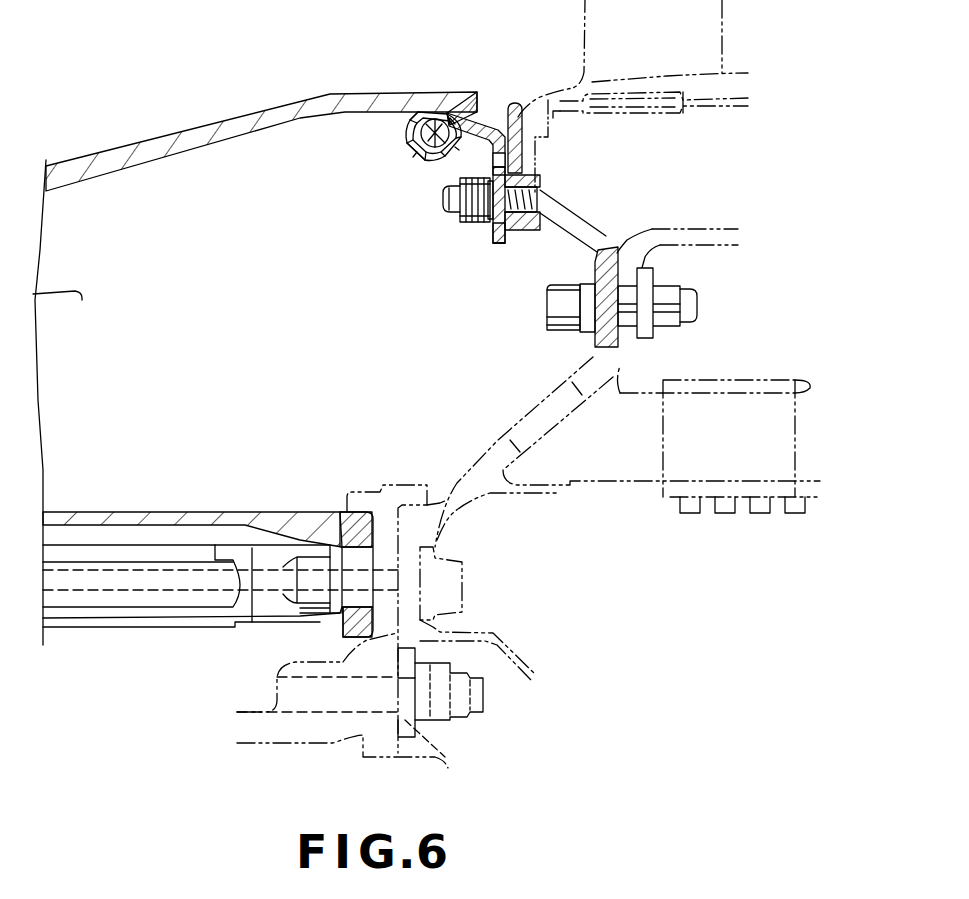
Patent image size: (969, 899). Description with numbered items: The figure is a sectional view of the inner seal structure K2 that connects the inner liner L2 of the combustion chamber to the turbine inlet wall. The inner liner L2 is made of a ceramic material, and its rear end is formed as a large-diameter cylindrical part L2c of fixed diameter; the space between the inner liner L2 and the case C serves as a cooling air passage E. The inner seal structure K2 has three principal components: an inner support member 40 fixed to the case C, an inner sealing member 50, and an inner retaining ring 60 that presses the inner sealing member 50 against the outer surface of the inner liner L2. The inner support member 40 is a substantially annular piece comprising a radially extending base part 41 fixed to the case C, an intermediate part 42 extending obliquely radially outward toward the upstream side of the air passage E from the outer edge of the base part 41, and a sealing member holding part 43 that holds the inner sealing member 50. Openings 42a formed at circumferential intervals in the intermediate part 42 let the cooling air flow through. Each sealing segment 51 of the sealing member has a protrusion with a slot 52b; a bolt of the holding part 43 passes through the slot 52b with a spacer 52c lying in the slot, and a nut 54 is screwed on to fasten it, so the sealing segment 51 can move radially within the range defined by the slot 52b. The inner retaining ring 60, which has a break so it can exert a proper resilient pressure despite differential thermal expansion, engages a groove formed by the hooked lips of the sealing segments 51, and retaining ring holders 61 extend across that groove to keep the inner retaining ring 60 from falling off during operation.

The cooling air passage E is at (241, 257).
The inner liner L2 is at (232, 118).
The large-diameter cylindrical part L2c is at (423, 90).
The sealing segment 51 is at (491, 120).
The slot 52b is at (503, 184).
The spacer 52c is at (485, 232).
The sealing member holding part 43 is at (522, 131).
The inner retaining ring 60 is at (410, 125).
The retaining ring holder 61 is at (442, 155).
The inner sealing member 50 is at (405, 148).
The nut 54 is at (473, 220).
The inner support member 40 is at (567, 223).
The opening 42a is at (592, 249).
The intermediate part 42 is at (553, 230).
The base part 41 is at (613, 333).
The inner seal structure K2 is at (452, 255).
The case C is at (485, 468).